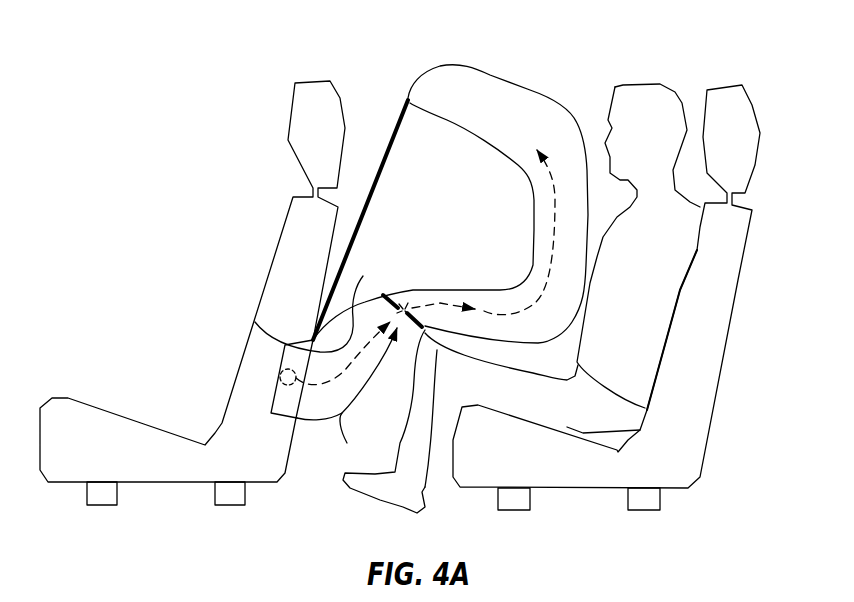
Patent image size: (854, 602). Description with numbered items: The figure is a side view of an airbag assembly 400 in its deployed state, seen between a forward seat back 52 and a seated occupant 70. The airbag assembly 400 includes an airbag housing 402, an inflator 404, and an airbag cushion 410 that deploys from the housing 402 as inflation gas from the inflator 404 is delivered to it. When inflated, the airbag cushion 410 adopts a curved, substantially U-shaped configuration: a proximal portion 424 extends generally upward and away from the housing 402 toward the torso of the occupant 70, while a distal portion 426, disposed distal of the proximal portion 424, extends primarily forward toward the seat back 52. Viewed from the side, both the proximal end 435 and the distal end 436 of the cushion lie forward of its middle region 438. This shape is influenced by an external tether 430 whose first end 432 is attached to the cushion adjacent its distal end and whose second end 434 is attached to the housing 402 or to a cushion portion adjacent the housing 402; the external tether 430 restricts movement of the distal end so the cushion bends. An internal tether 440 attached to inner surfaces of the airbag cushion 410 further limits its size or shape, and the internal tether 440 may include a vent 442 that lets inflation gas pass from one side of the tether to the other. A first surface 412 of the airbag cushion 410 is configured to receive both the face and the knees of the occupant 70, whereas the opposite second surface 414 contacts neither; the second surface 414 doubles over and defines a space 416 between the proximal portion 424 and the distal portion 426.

The seat back 52 is at (311, 283).
The occupant 70 is at (656, 258).
The airbag assembly 400 is at (462, 263).
The airbag housing 402 is at (285, 344).
The inflator 404 is at (280, 374).
The airbag cushion 410 is at (547, 71).
The first surface 412 is at (582, 156).
The second surface 414 is at (531, 255).
The space 416 is at (440, 213).
The proximal portion 424 is at (414, 330).
The distal portion 426 is at (562, 86).
The external tether 430 is at (375, 183).
The first end 432 is at (408, 104).
The second end 434 is at (320, 302).
The proximal end 435 is at (315, 440).
The distal end 436 is at (404, 70).
The middle region 438 is at (497, 211).
The internal tether 440 is at (347, 397).
The vent 442 is at (410, 301).